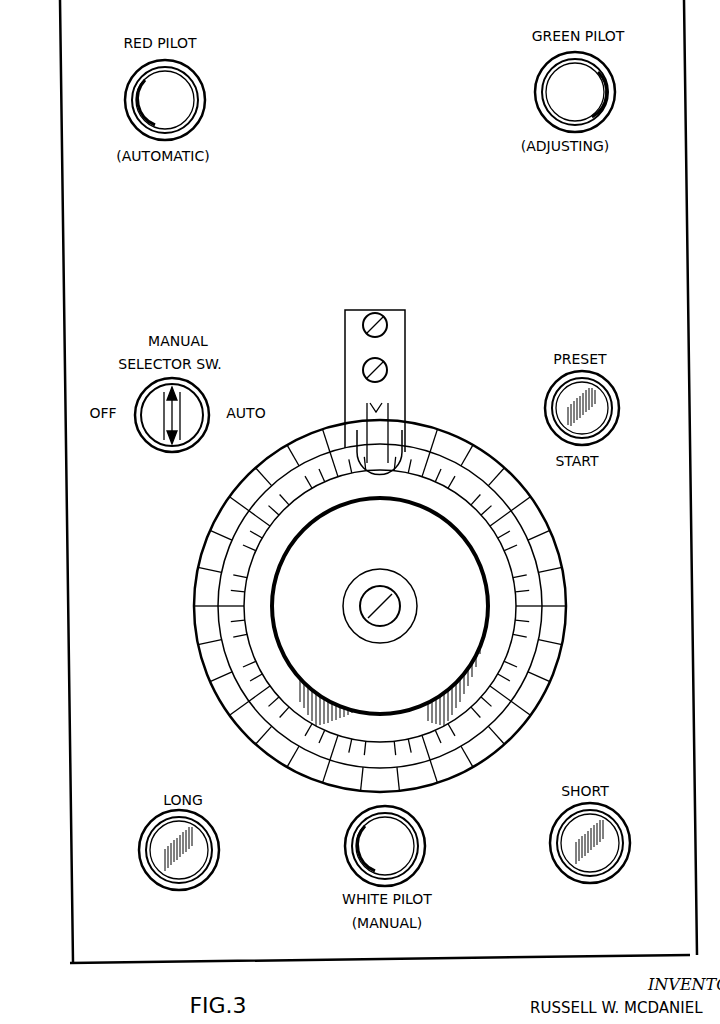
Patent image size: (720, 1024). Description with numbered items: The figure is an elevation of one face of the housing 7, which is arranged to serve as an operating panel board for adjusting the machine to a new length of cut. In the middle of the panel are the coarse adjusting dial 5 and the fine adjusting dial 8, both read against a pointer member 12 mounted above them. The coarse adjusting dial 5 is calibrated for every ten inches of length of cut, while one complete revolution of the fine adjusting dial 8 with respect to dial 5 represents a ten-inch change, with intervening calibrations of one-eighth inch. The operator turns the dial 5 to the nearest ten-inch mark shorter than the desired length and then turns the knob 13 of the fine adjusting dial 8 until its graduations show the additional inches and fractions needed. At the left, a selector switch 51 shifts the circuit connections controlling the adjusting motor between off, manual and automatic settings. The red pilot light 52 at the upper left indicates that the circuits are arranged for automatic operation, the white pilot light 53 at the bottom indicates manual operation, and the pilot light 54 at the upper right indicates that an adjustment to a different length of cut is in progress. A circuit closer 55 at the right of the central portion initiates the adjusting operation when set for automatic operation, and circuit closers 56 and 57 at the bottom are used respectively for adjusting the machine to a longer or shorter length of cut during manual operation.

The housing 7 is at (63, 188).
The coarse adjusting dial 5 is at (451, 436).
The fine adjusting dial 8 is at (493, 458).
The pointer member 12 is at (378, 400).
The knob 13 is at (455, 517).
The selector switch 51 is at (205, 398).
The red pilot light 52 is at (205, 97).
The white pilot light 53 is at (420, 830).
The pilot light 54 is at (537, 88).
The circuit closer 55 is at (620, 409).
The circuit closer 56 is at (218, 845).
The circuit closer 57 is at (624, 826).